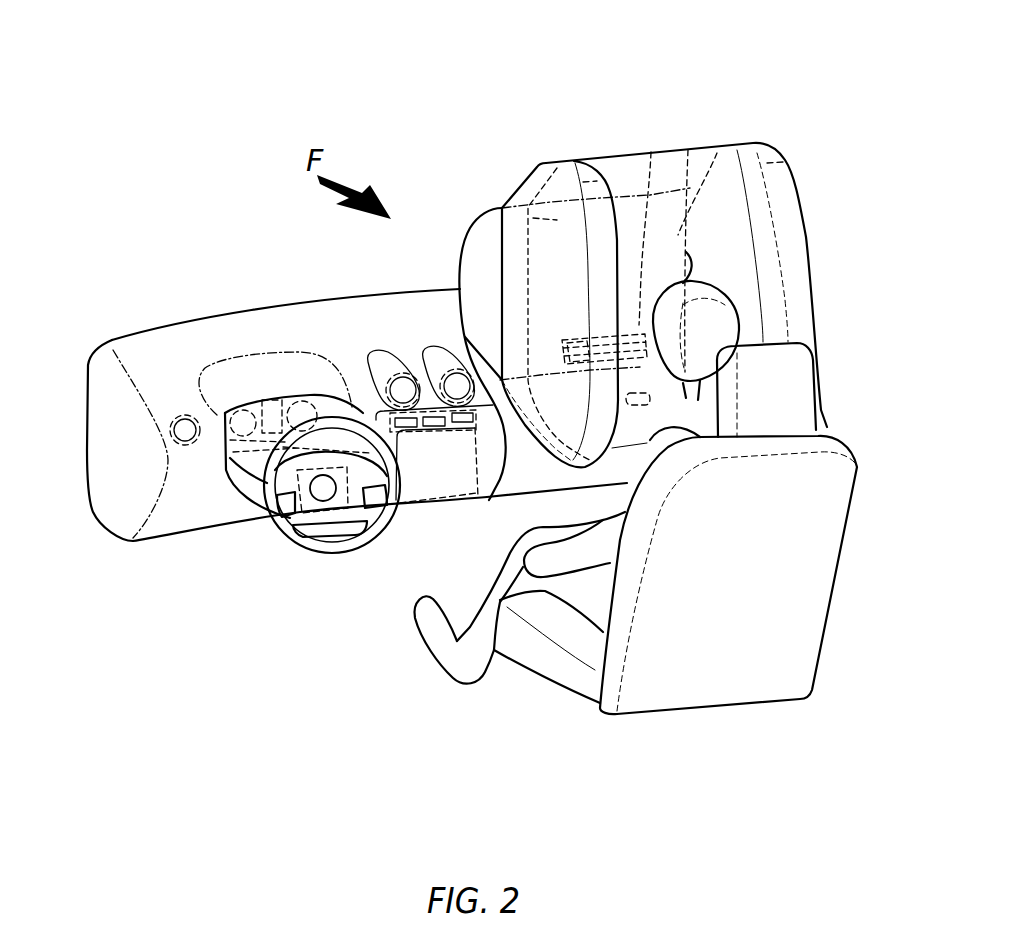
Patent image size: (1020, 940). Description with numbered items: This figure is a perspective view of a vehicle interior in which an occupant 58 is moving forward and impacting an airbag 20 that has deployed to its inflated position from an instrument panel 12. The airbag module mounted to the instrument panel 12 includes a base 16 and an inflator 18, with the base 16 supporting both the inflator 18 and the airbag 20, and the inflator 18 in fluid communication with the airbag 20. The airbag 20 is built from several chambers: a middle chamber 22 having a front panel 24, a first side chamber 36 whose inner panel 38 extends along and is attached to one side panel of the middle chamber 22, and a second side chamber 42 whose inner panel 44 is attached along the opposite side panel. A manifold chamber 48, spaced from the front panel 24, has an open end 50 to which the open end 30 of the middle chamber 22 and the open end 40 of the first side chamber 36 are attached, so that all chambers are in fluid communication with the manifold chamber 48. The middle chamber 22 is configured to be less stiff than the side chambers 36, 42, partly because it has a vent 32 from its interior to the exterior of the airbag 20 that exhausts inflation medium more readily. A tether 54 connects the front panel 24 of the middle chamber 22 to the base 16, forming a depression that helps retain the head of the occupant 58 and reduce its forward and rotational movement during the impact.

The instrument panel 12 is at (124, 478).
The base 16 is at (582, 360).
The inflator 18 is at (584, 346).
The airbag 20 is at (794, 81).
The middle chamber 22 is at (664, 145).
The front panel 24 is at (625, 213).
The open end 30 is at (688, 150).
The vent 32 is at (635, 410).
The first side chamber 36 is at (534, 163).
The inner panel 38 is at (550, 219).
The open end 40 is at (518, 320).
The second side chamber 42 is at (800, 182).
The inner panel 44 is at (733, 243).
The manifold chamber 48 is at (472, 214).
The open end 50 is at (573, 278).
The tether 54 is at (637, 337).
The occupant 58 is at (741, 313).